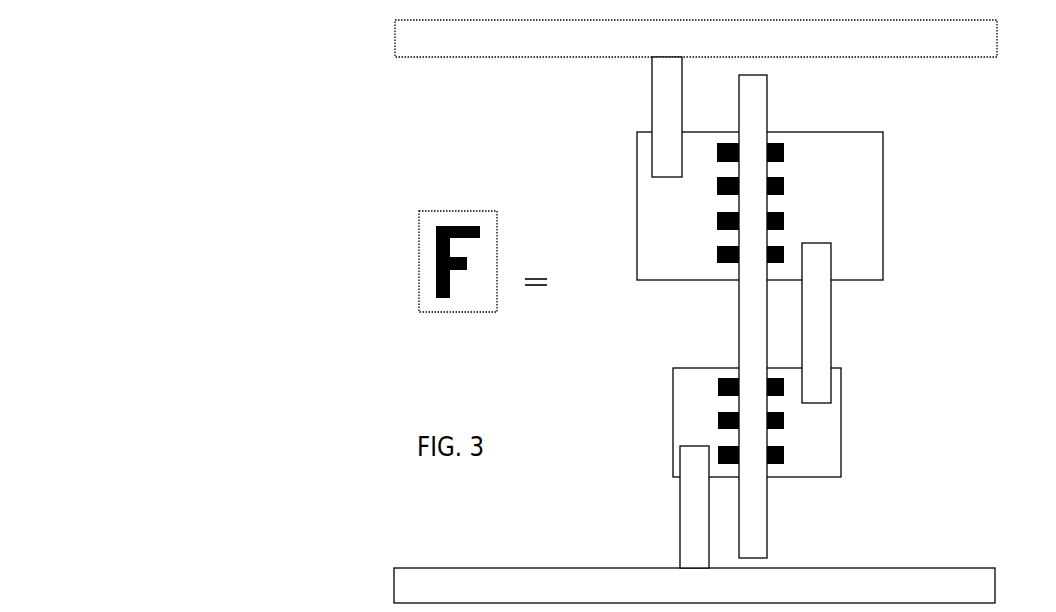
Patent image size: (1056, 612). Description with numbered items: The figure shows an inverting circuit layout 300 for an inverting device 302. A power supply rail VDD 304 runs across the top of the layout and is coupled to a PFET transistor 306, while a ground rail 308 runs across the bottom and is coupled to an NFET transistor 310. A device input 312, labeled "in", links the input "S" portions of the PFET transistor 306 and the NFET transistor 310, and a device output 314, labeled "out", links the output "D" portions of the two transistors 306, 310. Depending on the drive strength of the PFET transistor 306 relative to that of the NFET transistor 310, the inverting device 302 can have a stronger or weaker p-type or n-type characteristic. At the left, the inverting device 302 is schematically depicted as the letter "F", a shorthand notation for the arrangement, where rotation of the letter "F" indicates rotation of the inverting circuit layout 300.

The inverting circuit layout 300 is at (268, 174).
The inverting device 302 is at (447, 312).
The power supply rail VDD 304 is at (923, 52).
The PFET transistor 306 is at (882, 172).
The ground rail 308 is at (935, 565).
The NFET transistor 310 is at (841, 460).
The device input 312 is at (739, 352).
The device output 314 is at (832, 293).